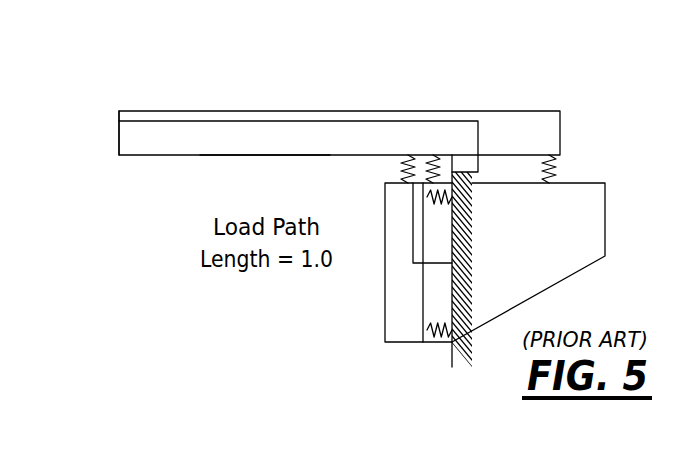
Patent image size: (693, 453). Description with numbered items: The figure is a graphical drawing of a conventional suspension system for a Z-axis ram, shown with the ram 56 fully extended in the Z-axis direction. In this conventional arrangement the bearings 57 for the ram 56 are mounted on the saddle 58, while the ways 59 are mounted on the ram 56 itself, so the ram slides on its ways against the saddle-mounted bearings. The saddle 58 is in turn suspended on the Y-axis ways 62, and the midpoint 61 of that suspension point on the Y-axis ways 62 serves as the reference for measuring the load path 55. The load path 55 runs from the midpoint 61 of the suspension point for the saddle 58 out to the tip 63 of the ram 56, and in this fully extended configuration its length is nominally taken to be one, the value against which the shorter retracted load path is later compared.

The load path 55 is at (367, 121).
The ram 56 is at (408, 110).
The bearings 57 is at (408, 159).
The saddle 58 is at (550, 248).
The ways 59 is at (278, 155).
The midpoint of the suspension point 61 is at (453, 265).
The Y-axis ways 62 is at (453, 322).
The tip of the ram 63 is at (119, 140).